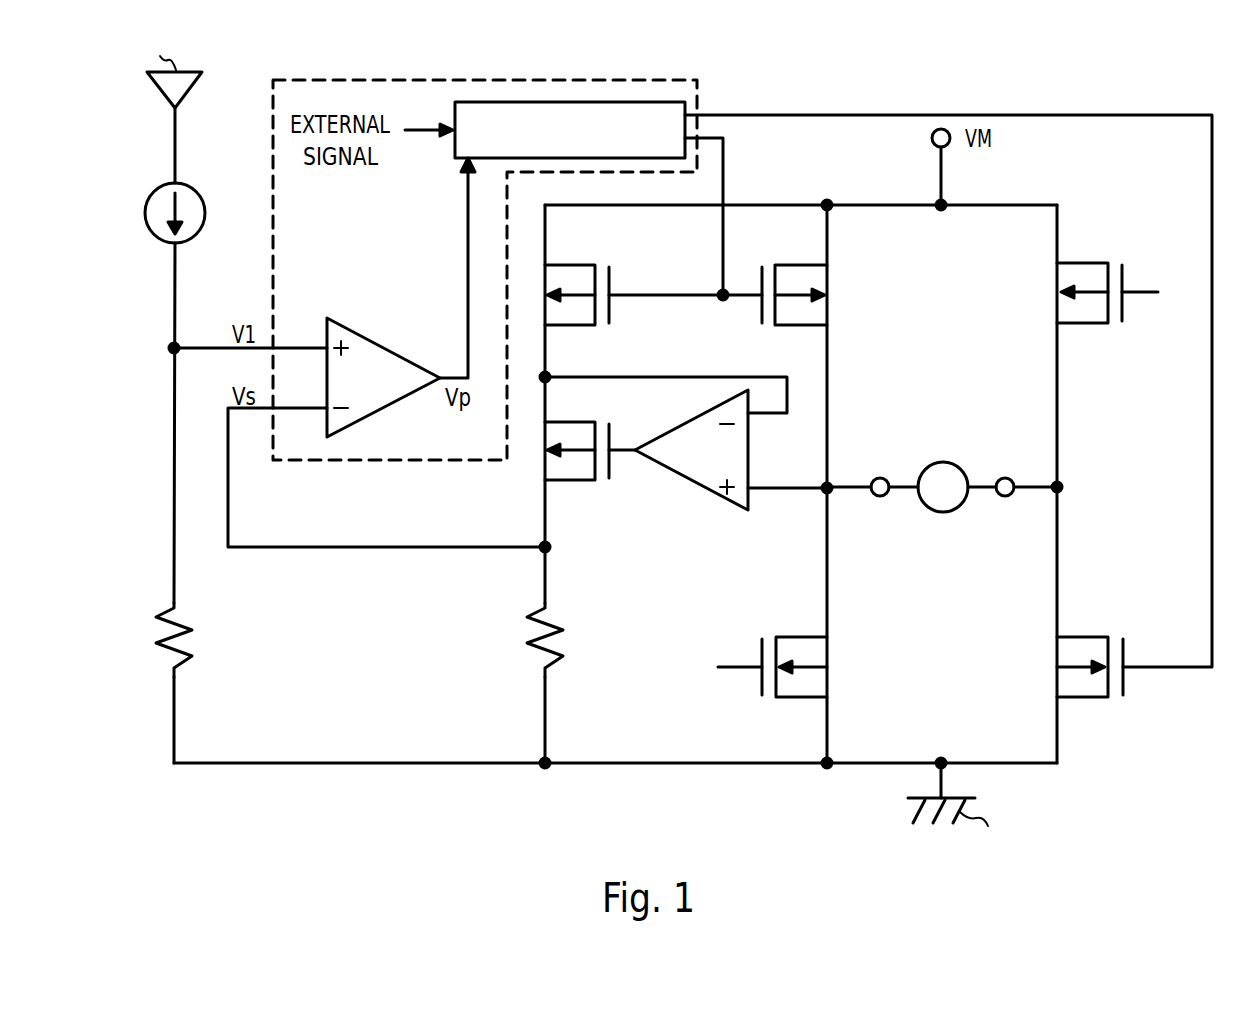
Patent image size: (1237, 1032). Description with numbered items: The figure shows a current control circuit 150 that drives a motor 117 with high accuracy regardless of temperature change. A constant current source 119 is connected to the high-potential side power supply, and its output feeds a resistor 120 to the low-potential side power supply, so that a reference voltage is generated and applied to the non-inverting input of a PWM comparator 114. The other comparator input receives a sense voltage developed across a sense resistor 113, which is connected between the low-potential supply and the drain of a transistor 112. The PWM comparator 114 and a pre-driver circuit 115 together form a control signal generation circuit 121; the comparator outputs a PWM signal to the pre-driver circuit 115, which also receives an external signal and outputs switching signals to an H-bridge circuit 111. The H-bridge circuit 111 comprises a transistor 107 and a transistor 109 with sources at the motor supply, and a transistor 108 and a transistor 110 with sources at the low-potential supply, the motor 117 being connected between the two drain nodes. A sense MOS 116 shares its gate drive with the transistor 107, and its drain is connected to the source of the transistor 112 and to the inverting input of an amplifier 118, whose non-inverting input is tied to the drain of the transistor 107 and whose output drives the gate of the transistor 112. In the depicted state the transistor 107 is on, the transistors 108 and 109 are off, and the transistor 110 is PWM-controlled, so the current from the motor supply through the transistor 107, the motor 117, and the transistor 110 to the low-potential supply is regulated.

The current control circuit 150 is at (969, 88).
The control signal generation circuit 121 is at (488, 78).
The pre-driver circuit 115 is at (584, 100).
The PWM comparator 114 is at (392, 404).
The constant current source 119 is at (206, 215).
The resistor 120 is at (193, 642).
The sense resistor 113 is at (564, 642).
The sense MOS 116 is at (583, 328).
The transistor 107 is at (777, 328).
The transistor 109 is at (1096, 326).
The transistor 112 is at (562, 483).
The amplifier 118 is at (696, 485).
The motor 117 is at (948, 512).
The transistor 108 is at (787, 700).
The transistor 110 is at (1090, 700).
The H-bridge circuit 111 is at (1010, 766).